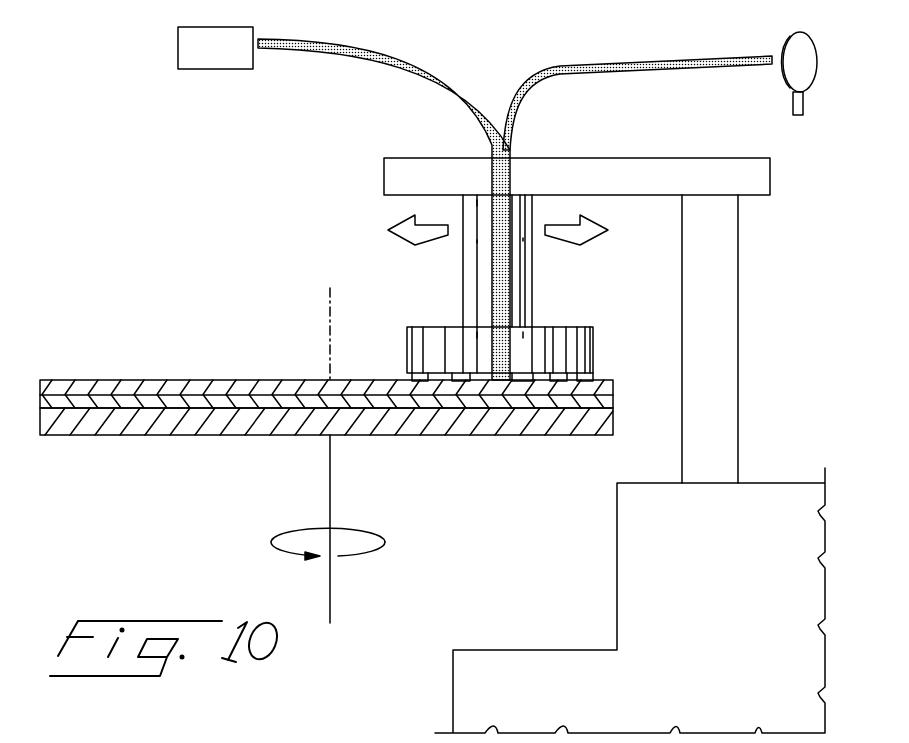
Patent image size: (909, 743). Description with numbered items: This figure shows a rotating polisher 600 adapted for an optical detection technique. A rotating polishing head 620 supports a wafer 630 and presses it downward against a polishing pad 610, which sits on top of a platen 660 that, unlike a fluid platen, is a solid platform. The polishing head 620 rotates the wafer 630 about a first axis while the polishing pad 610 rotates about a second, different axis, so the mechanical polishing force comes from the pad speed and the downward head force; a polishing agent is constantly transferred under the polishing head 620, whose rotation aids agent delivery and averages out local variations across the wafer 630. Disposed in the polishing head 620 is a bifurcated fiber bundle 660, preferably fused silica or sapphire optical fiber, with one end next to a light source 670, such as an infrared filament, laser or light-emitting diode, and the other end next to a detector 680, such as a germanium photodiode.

The rotating polisher 600 is at (292, 305).
The polishing pad 610 is at (92, 380).
The rotating polishing head 620 is at (573, 327).
The wafer 630 is at (407, 378).
The platen / bifurcated fiber bundle 660 is at (635, 70).
The light source 670 is at (817, 64).
The detector 680 is at (213, 69).